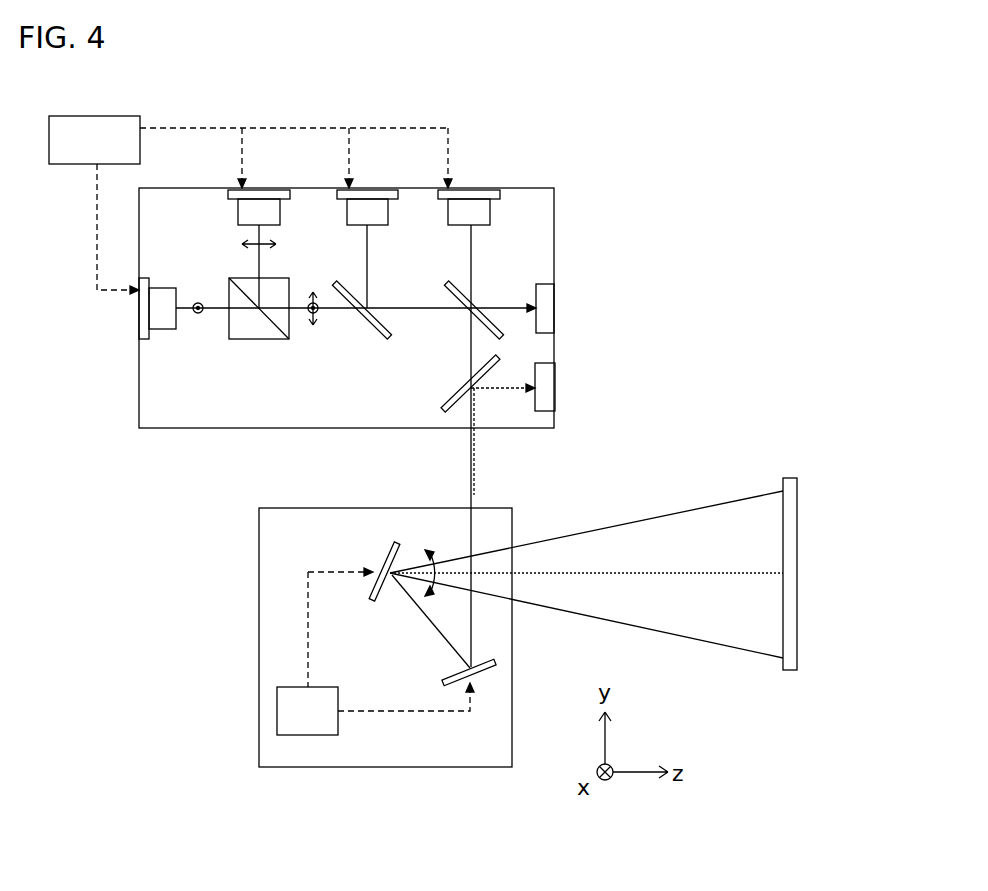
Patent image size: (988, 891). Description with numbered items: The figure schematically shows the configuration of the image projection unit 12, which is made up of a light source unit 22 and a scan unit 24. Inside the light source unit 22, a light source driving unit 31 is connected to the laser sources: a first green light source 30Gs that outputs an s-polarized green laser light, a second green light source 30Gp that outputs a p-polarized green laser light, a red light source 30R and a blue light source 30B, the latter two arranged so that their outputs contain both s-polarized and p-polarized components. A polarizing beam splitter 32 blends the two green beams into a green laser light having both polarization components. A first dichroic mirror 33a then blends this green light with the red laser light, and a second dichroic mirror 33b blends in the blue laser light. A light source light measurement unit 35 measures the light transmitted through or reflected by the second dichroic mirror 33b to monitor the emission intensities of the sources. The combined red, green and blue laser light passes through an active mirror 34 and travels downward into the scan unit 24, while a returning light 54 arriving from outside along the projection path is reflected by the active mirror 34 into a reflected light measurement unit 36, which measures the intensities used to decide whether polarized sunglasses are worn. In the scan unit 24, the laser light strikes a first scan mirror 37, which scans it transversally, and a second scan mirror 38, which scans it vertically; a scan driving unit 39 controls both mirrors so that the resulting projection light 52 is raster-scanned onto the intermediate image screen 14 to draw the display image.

The image projection unit 12 is at (602, 124).
The intermediate image screen 14 is at (787, 478).
The light source unit 22 is at (549, 157).
The scan unit 24 is at (230, 521).
The light source driving unit 31 is at (63, 165).
The second green light source 30Gp is at (272, 190).
The red light source 30R is at (378, 189).
The blue light source 30B is at (487, 190).
The first green light source 30Gs is at (139, 320).
The polarizing beam splitter 32 is at (258, 340).
The first dichroic mirror 33a is at (336, 285).
The second dichroic mirror 33b is at (447, 285).
The active mirror 34 is at (446, 396).
The light source light measurement unit 35 is at (554, 308).
The reflected light measurement unit 36 is at (555, 388).
The returning light 54 is at (476, 473).
The first scan mirror 37 is at (443, 683).
The second scan mirror 38 is at (372, 604).
The scan driving unit 39 is at (340, 724).
The projection light 52 is at (694, 510).